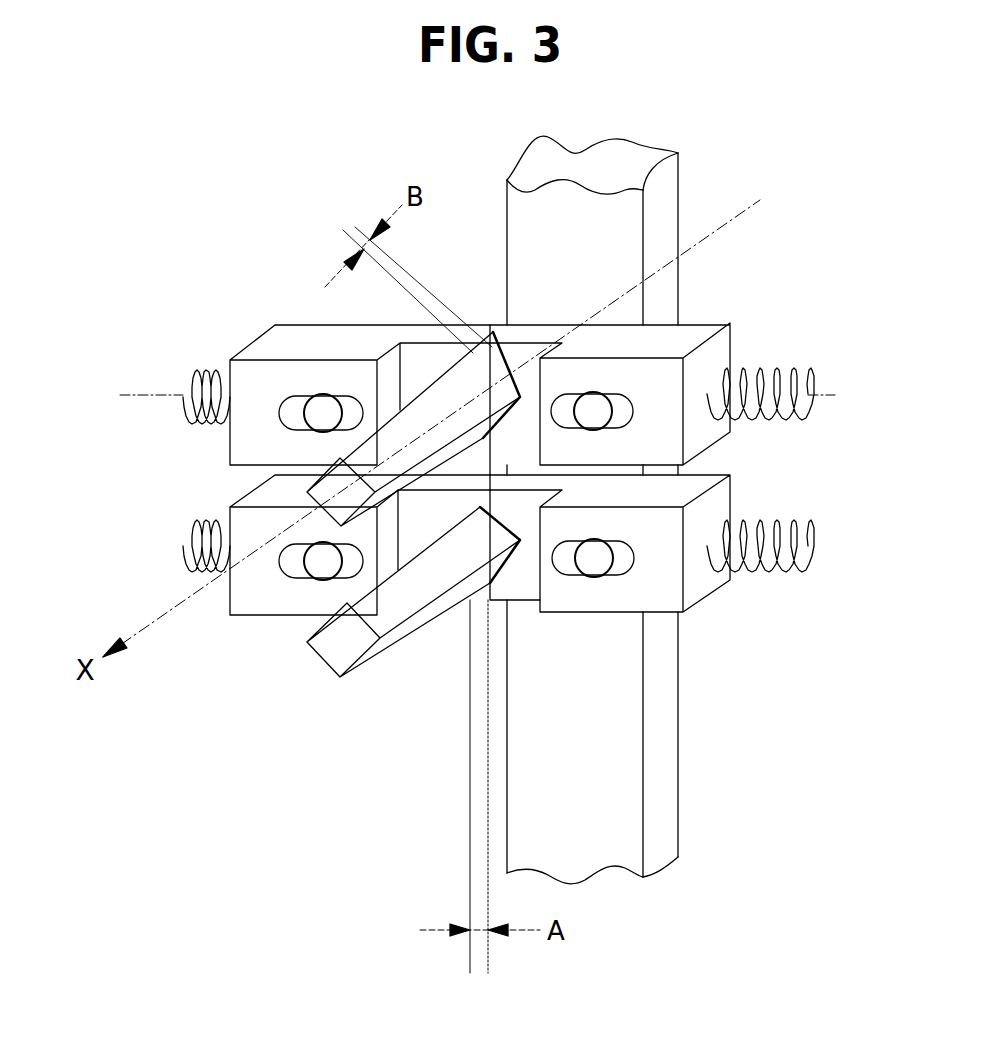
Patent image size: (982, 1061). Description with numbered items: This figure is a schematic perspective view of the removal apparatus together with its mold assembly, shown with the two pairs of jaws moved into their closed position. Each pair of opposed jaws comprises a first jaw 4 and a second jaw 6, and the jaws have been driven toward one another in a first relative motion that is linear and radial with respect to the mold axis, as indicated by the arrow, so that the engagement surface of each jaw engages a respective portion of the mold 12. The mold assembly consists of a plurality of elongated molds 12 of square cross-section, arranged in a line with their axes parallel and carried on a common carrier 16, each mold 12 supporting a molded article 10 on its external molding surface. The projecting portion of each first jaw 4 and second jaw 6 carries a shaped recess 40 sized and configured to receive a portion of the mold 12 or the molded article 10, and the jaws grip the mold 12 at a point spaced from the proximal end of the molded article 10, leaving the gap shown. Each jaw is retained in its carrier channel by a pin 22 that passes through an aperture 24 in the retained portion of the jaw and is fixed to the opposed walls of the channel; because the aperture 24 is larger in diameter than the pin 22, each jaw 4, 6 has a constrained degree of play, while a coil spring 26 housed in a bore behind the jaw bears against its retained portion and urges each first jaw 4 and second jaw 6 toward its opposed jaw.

The first jaw 4 is at (684, 613).
The second jaw 6 is at (257, 605).
The molded article 10 is at (343, 647).
The mold 12 is at (462, 512).
The common carrier 16 is at (558, 771).
The pin 22 is at (603, 398).
The aperture 24 is at (628, 414).
The coil spring 26 is at (183, 547).
The shaped recess 40 is at (492, 599).